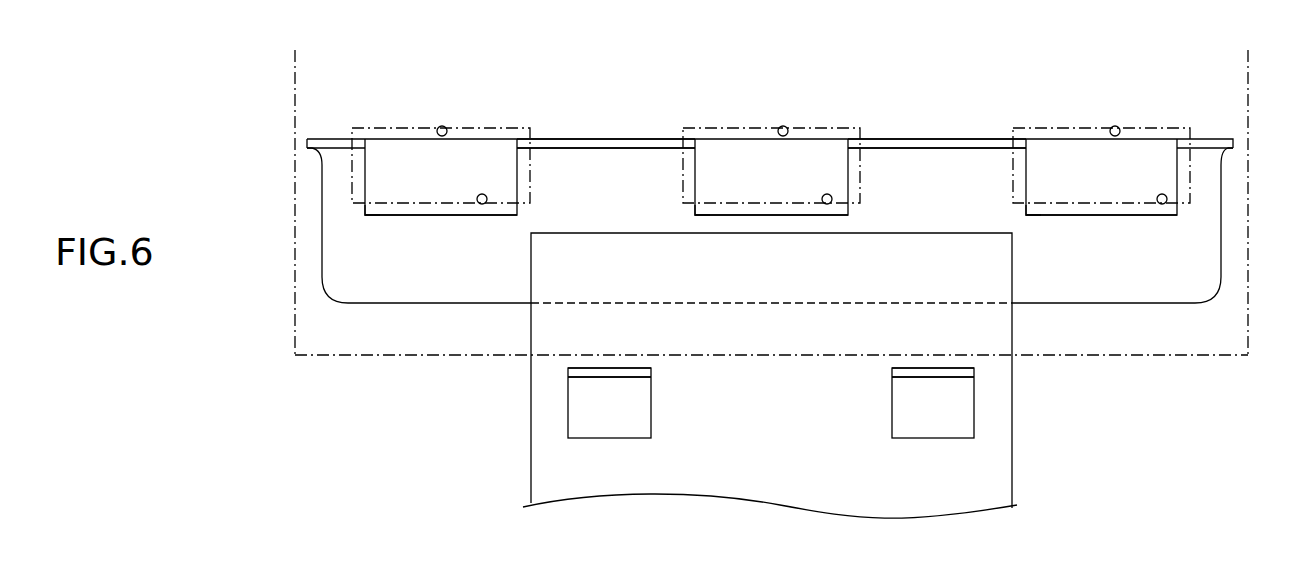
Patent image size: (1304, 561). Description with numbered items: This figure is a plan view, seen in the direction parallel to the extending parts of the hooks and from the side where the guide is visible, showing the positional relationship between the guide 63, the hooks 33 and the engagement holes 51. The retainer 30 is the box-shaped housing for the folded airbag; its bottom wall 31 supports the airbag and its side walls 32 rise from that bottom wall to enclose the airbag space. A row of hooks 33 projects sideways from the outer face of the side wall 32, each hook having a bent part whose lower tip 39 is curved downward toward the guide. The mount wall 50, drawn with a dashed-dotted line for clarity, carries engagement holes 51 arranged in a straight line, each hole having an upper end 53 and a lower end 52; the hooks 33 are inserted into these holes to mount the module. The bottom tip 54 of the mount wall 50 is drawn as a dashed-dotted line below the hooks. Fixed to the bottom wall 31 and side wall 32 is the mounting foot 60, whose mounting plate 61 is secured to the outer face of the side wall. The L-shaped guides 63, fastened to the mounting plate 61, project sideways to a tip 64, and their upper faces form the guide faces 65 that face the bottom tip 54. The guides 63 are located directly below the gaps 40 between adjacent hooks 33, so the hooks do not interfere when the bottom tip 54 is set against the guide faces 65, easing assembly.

The retainer 30 is at (751, 279).
The bottom wall 31 is at (403, 306).
The side wall 32 is at (372, 284).
The hook 33 is at (771, 207).
The lower tip 39 is at (378, 216).
The gap 40 is at (600, 172).
The mount wall 50 is at (322, 93).
The engagement hole 51 is at (500, 127).
The lower end 52 is at (487, 206).
The upper end 53 is at (446, 122).
The bottom tip 54 is at (425, 360).
The mounting foot 60 is at (820, 375).
The mounting plate 61 is at (770, 506).
The guide 63 is at (770, 405).
The tip 64 is at (576, 373).
The guide face 65 is at (590, 367).